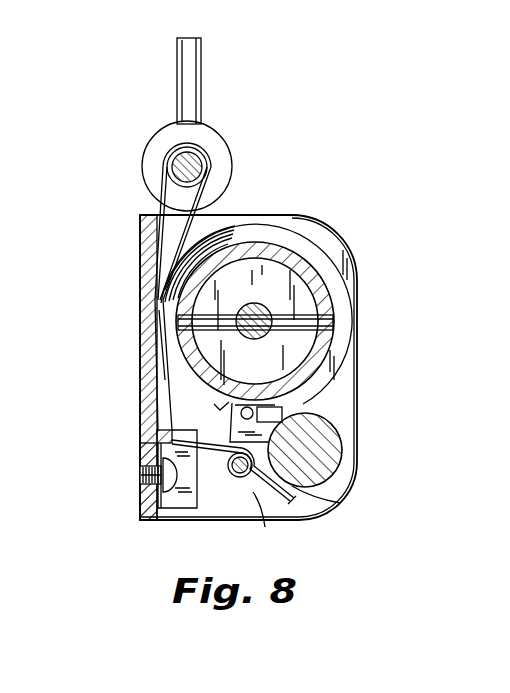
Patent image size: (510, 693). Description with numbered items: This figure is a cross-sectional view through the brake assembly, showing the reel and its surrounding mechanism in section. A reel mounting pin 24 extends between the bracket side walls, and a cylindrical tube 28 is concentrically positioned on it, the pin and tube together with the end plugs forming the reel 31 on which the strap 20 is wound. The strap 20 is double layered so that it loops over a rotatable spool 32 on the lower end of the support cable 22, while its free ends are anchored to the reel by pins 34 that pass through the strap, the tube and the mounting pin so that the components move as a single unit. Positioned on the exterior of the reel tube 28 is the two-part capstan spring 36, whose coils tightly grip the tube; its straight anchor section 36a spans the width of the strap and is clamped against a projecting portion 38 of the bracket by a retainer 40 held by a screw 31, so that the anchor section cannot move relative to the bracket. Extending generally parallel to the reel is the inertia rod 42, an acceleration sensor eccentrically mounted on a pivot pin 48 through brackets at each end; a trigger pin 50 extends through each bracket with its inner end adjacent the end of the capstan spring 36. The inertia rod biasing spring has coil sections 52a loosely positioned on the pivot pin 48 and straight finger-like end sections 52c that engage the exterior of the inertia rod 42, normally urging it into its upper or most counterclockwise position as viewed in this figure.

The strap 20 is at (160, 185).
The support cable 22 is at (199, 74).
The reel mounting pin 24 is at (256, 304).
The cylindrical tube 28 is at (272, 243).
The reel 31 is at (140, 475).
The rotatable spool 32 is at (217, 139).
The pins 34 is at (333, 328).
The capstan spring 36 is at (356, 294).
The anchor section 36a is at (157, 435).
The projecting portion 38 is at (157, 400).
The retainer 40 is at (178, 510).
The inertia rod 42 is at (340, 448).
The pivot pin 48 is at (236, 478).
The trigger pin 50 is at (250, 406).
The coil sections 52a is at (264, 510).
The end sections 52c is at (340, 503).